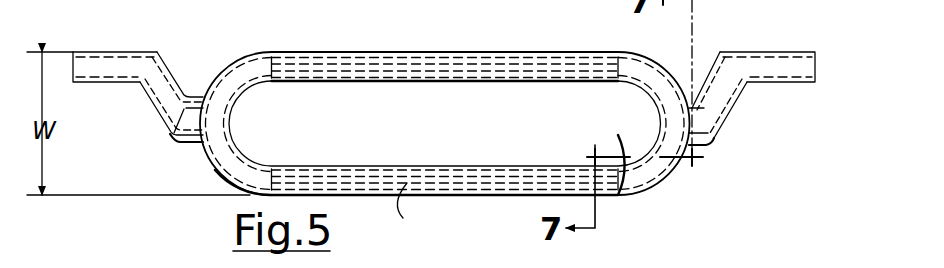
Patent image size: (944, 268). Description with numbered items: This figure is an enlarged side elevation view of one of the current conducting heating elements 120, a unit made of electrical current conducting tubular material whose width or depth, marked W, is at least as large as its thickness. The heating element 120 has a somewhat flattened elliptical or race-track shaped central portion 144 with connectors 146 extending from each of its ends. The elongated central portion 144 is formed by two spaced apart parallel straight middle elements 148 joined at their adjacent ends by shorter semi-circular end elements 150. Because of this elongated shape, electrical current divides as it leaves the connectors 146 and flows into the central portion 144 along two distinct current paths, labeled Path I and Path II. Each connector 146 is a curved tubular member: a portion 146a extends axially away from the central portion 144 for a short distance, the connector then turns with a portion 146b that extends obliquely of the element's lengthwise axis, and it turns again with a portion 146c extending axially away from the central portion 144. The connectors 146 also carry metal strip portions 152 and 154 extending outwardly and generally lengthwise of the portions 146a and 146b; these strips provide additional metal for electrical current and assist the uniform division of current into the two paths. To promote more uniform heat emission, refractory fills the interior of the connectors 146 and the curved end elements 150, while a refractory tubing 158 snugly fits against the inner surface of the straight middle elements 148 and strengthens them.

The current conducting heating element 120 is at (555, 46).
The central portion 144 is at (378, 52).
The connector 146 is at (103, 52).
The axial portion of connector 146a is at (177, 147).
The oblique portion of connector 146b is at (152, 107).
The outer axial portion of connector 146c is at (73, 86).
The straight middle element 148 is at (478, 166).
The end element 150 is at (209, 160).
The metal strip portion 152 is at (183, 34).
The metal strip portion 154 is at (150, 125).
The refractory tubing 158 is at (332, 65).